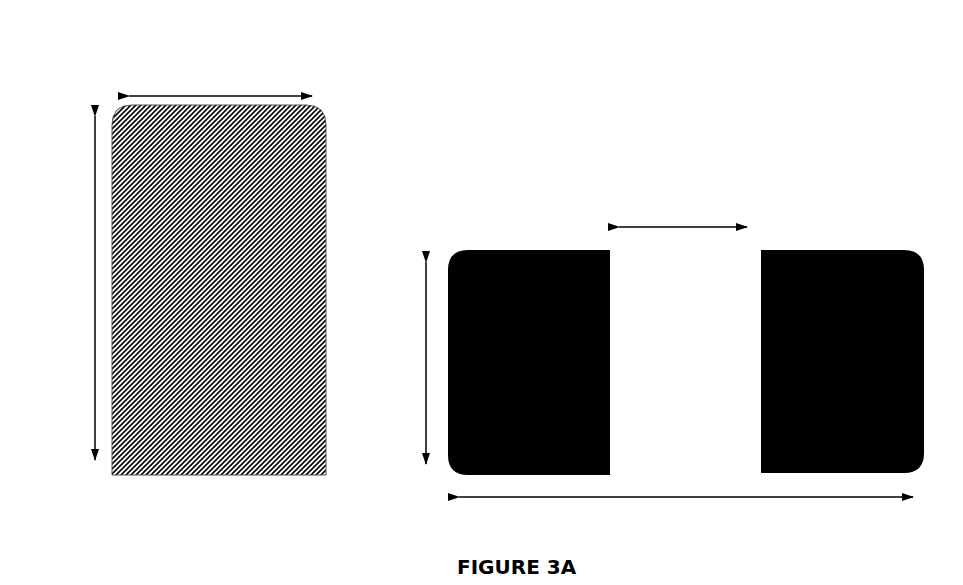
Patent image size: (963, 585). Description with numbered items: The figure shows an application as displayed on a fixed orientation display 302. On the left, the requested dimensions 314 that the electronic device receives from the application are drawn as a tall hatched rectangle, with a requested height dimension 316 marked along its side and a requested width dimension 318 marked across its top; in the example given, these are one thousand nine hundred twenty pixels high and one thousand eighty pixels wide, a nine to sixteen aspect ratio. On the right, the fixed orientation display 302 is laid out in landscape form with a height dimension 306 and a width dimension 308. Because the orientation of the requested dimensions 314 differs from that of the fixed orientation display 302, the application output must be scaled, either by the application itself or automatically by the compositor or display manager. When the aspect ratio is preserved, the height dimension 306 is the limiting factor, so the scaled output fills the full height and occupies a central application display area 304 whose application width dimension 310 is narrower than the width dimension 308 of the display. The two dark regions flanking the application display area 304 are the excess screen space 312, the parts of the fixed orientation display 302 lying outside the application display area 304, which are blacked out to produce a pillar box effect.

The fixed orientation display 302 is at (550, 241).
The application display area 304 is at (683, 360).
The height dimension 306 is at (416, 300).
The width dimension 308 is at (527, 492).
The application width dimension 310 is at (685, 216).
The excess screen space 312 is at (885, 240).
The requested dimensions 314 is at (127, 490).
The requested height dimension 316 is at (85, 155).
The requested width dimension 318 is at (192, 86).